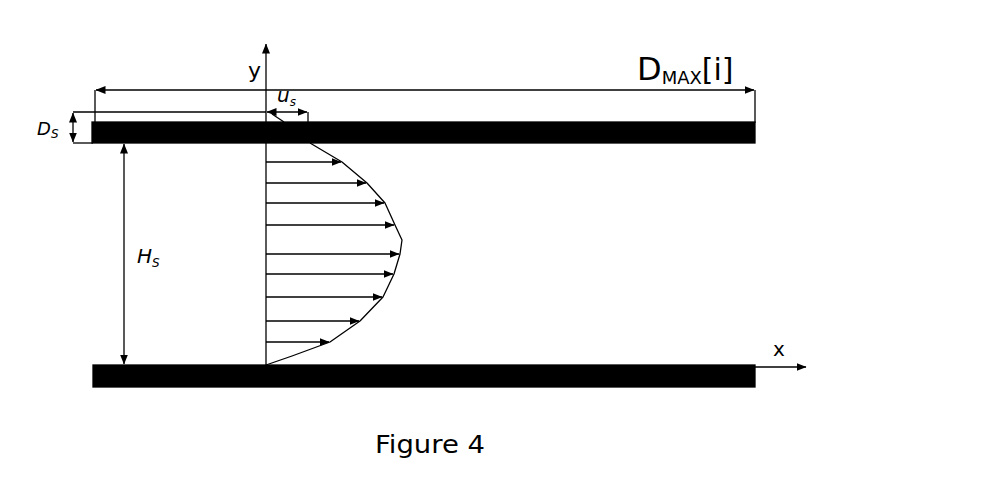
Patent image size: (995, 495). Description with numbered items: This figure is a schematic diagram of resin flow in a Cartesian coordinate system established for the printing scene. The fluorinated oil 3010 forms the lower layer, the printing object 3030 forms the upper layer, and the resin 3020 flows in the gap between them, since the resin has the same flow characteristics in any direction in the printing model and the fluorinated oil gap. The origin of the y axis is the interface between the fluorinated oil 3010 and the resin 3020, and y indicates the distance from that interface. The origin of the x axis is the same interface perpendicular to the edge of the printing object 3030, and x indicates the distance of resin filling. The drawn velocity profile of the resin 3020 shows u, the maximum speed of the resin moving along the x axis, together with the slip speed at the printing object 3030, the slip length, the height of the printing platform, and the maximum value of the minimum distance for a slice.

The printing object 3030 is at (755, 133).
The fluorinated oil 3010 is at (755, 387).
The resin 3020 is at (403, 240).